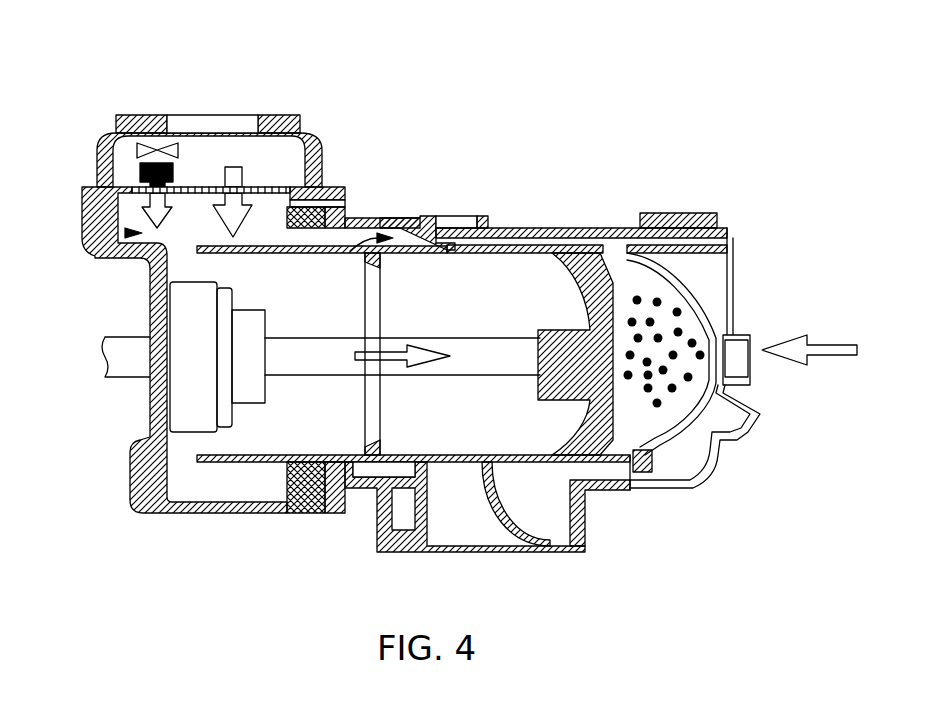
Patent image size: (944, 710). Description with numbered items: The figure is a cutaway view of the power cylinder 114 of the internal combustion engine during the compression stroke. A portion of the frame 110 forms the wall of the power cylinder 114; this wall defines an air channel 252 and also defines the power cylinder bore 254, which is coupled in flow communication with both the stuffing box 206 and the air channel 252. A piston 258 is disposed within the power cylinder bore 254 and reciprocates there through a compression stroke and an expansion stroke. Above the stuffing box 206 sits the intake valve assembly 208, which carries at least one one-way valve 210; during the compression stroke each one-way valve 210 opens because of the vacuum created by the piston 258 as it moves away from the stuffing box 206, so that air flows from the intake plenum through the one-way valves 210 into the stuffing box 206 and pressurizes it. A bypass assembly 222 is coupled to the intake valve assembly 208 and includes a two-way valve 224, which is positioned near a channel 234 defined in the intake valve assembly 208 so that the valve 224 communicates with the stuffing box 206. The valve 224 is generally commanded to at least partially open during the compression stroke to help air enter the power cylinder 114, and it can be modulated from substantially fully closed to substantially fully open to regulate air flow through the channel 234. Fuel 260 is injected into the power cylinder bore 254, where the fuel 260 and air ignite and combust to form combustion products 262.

The two-way valve 224 is at (138, 116).
The bypass assembly 222 is at (182, 134).
The channel 234 is at (140, 172).
The intake valve assembly 208 is at (258, 186).
The one-way valve 210 is at (262, 186).
The stuffing box 206 is at (125, 233).
The frame 110 is at (325, 145).
The air channel 252 is at (340, 243).
The power cylinder bore 254 is at (480, 307).
The piston 258 is at (605, 265).
The combustion products 262 is at (690, 328).
The fuel 260 is at (835, 343).
The power cylinder 114 is at (630, 505).